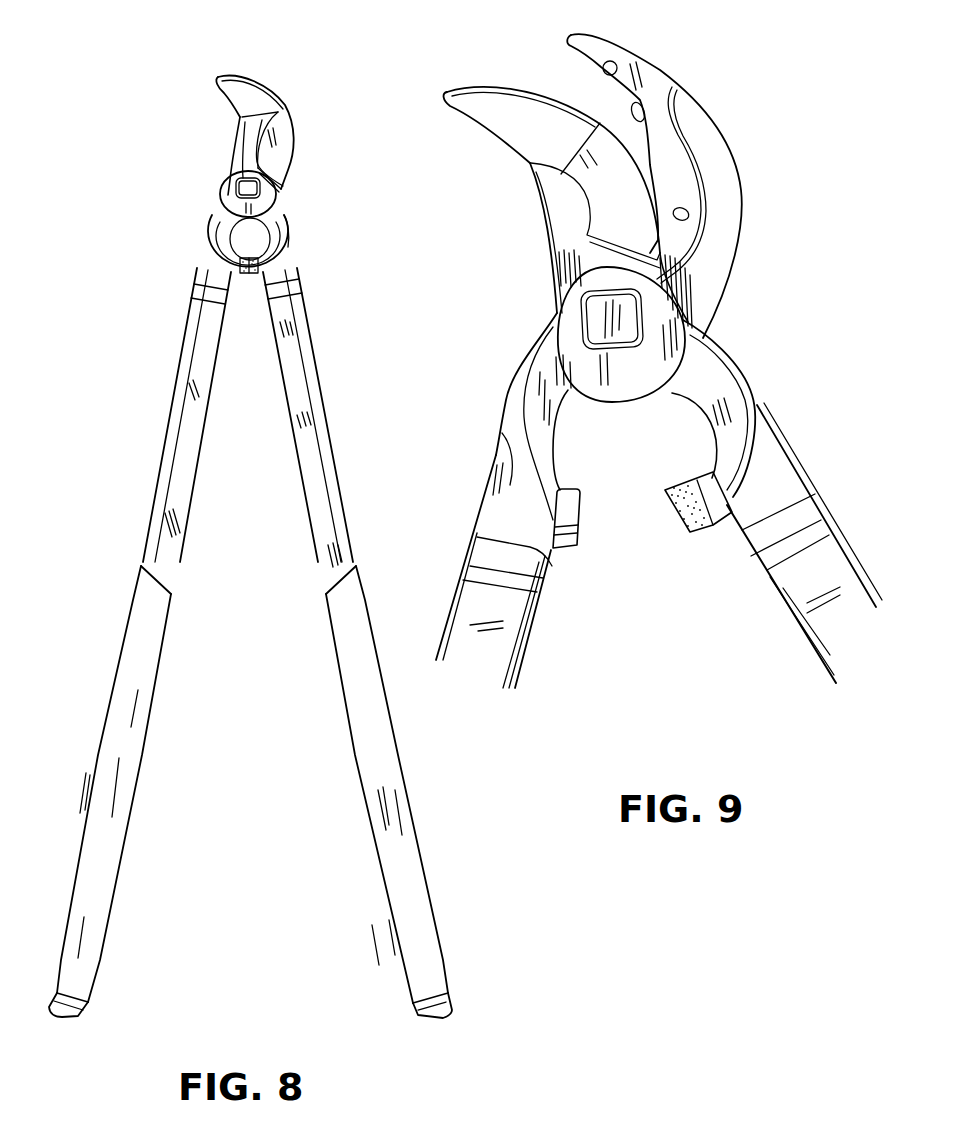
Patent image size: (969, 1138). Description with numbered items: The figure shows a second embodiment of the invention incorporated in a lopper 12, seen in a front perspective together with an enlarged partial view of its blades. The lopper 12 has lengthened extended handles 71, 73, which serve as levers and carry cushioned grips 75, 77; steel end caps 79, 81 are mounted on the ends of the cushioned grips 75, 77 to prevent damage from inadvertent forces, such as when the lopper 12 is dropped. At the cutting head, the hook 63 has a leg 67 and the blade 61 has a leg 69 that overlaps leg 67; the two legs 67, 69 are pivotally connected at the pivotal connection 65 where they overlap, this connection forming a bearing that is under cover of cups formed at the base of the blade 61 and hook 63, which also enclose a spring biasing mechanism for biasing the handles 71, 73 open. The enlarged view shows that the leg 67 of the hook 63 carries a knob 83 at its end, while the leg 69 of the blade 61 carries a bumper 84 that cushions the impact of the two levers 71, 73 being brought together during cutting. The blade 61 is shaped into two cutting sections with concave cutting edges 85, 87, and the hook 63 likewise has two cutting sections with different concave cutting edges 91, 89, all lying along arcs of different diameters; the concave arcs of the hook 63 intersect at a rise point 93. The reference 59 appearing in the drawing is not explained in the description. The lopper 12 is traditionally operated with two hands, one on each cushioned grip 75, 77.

In FIG. 8, the lopper 12 is at (290, 80).
In FIG. 8, the cutting head assembly 59 is at (149, 214).
In FIG. 8, the blade 61 is at (228, 101).
In FIG. 9, the blade 61 is at (503, 136).
In FIG. 8, the hook 63 is at (291, 136).
In FIG. 9, the hook 63 is at (731, 151).
In FIG. 8, the pivotal connection 65 is at (277, 200).
In FIG. 9, the pivotal connection 65 is at (622, 408).
In FIG. 8, the leg 67 is at (210, 232).
In FIG. 9, the leg 67 is at (517, 403).
In FIG. 8, the leg 69 is at (288, 226).
In FIG. 9, the leg 69 is at (725, 350).
In FIG. 8, the handle 71 is at (186, 388).
In FIG. 9, the handle 71 is at (530, 637).
In FIG. 8, the handle 73 is at (300, 390).
In FIG. 9, the handle 73 is at (842, 560).
In FIG. 8, the cushioned grip 75 is at (142, 755).
In FIG. 8, the cushioned grip 77 is at (355, 748).
In FIG. 8, the steel end cap 79 is at (52, 1020).
In FIG. 8, the steel end cap 81 is at (447, 1020).
In FIG. 9, the knob 83 is at (580, 527).
In FIG. 9, the bumper 84 is at (700, 528).
In FIG. 9, the concave cutting edge 85 is at (522, 93).
In FIG. 9, the concave cutting edge 87 is at (650, 178).
In FIG. 9, the concave cutting edge 89 is at (612, 60).
In FIG. 9, the concave cutting edge 91 is at (700, 222).
In FIG. 9, the rise point 93 is at (640, 100).